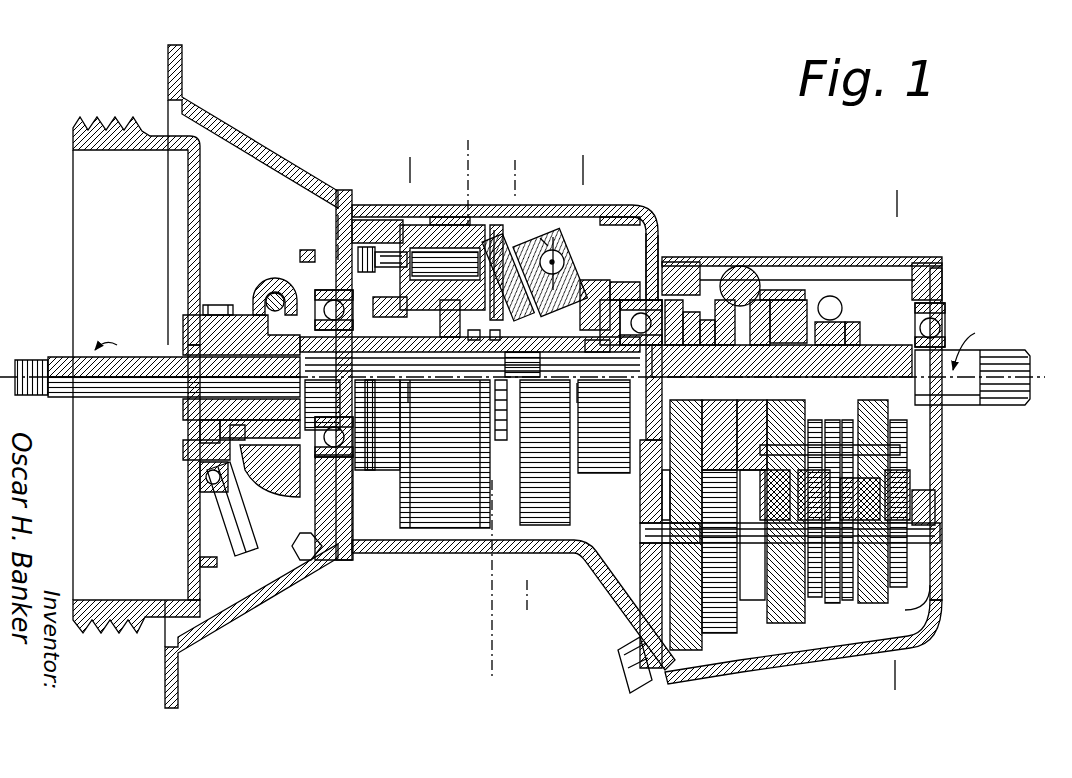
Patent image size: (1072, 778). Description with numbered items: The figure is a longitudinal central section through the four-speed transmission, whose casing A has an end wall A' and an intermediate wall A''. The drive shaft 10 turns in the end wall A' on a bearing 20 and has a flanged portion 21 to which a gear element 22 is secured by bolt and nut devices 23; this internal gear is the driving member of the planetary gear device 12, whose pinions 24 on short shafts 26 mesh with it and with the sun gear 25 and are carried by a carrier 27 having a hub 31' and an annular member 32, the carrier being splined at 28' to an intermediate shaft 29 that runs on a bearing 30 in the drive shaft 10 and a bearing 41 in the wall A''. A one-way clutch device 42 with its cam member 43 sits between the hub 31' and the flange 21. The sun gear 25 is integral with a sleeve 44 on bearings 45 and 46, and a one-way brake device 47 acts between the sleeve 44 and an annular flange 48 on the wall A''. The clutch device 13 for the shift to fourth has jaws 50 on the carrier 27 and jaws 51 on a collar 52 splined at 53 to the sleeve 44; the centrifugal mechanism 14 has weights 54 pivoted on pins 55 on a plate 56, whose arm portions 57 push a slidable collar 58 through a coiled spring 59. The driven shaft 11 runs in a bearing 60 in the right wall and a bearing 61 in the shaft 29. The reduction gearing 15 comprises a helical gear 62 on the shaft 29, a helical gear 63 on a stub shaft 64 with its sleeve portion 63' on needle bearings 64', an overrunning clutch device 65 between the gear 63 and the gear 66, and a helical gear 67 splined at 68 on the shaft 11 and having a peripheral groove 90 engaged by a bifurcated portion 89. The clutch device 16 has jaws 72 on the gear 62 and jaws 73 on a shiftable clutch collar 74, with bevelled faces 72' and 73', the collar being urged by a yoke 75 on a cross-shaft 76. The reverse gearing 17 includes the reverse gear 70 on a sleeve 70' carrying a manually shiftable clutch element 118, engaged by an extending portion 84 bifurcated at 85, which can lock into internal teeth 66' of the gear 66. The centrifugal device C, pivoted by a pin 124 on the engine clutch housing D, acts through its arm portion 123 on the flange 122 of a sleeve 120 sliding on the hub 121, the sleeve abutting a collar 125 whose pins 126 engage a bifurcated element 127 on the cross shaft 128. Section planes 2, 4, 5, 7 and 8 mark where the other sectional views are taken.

The engine clutch housing D is at (200, 205).
The end wall A' is at (251, 376).
The casing A is at (617, 441).
The one-way brake device 47 is at (648, 257).
The intermediate wall A'' is at (678, 318).
The antifriction bearing 41 is at (670, 277).
The drive shaft 10 is at (182, 348).
The hub 121 is at (182, 413).
The bifurcated element 127 is at (270, 317).
The cross shaft 128 is at (273, 295).
The bearing 20 is at (307, 262).
The sleeve 120 is at (187, 423).
The flange 122 is at (197, 440).
The arm portion 123 is at (200, 447).
The pin 124 is at (206, 477).
The radially extending pins 126 is at (235, 441).
The collar 125 is at (248, 463).
The centrifugal device C is at (240, 523).
The one-way clutch device 42 is at (330, 240).
The flanged portion 21 is at (322, 252).
The cam member 43 is at (300, 253).
The gear element 22 is at (423, 217).
The bolt and nut devices 23 is at (385, 255).
The pinions 24 is at (437, 248).
The short shafts 26 is at (453, 263).
The planetary gear device 12 is at (442, 217).
The clutch device 13 is at (503, 307).
The coiled spring 59 is at (522, 253).
The centrifugal weights 54 is at (525, 243).
The pins 55 is at (557, 253).
The centrifugally operated mechanism 14 is at (553, 250).
The plate 56 is at (545, 240).
The collar 52 is at (620, 210).
The spline 53 is at (580, 290).
The arm portion 57 is at (613, 290).
The slidable collar 58 is at (583, 303).
The annular flange 48 is at (636, 303).
The sun gear 25 is at (450, 327).
The sleeve 44 is at (508, 340).
The intermediate shaft 29 is at (590, 414).
The antifriction bearing 46 is at (585, 348).
The jaws 50 is at (468, 340).
The jaws 51 is at (493, 340).
The anti-friction bearing 30 is at (322, 400).
The hub 28' is at (381, 410).
The hub portion 31' is at (388, 425).
The carrier 27 is at (428, 347).
The antifriction bearing 45 is at (447, 320).
The annular member 32 is at (477, 390).
The clutch device 16 is at (728, 327).
The antifriction bearing 61 is at (673, 350).
The helical gear 62 is at (687, 323).
The jaws 72 is at (713, 321).
The cross-shaft 76 is at (757, 317).
The jaws 73 is at (804, 258).
The yoke 75 is at (770, 310).
The helical gear 67 is at (790, 300).
The clutch collar 74 is at (838, 300).
The peripheral groove 90 is at (835, 320).
The spline 68 is at (830, 337).
The antifriction bearing 60 is at (947, 313).
The driven shaft 11 is at (1007, 367).
The bevelled faces 73' is at (689, 425).
The bevelled faces 72' is at (703, 433).
The helical gear 63 is at (671, 555).
The overrunning clutch device 65 is at (675, 497).
The stub shaft 64 is at (651, 532).
The needle bearings 64' is at (802, 538).
The bifurcated portion 89 is at (820, 430).
The teeth 66' is at (832, 465).
The extending portion 84 is at (803, 488).
The bifurcation 85 is at (840, 487).
The reverse gear 70 is at (900, 494).
The sleeve 70' is at (953, 505).
The sleeve portion 63' is at (771, 513).
The helical gear 66 is at (808, 533).
The clutch element 118 is at (835, 587).
The reduction gearing 15 is at (765, 633).
The reverse gearing 17 is at (920, 633).
The section line 4- 4 is at (430, 170).
The section line 2- 2 is at (487, 150).
The section line 5- 5 is at (543, 170).
The section line 7- 7 is at (607, 170).
The section line 8- 8 is at (917, 203).